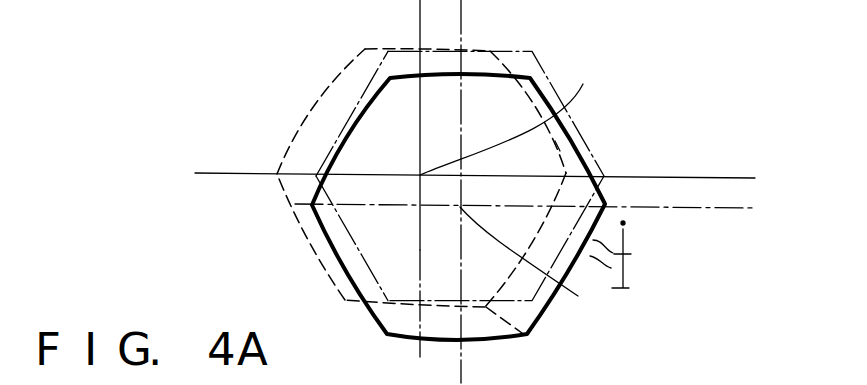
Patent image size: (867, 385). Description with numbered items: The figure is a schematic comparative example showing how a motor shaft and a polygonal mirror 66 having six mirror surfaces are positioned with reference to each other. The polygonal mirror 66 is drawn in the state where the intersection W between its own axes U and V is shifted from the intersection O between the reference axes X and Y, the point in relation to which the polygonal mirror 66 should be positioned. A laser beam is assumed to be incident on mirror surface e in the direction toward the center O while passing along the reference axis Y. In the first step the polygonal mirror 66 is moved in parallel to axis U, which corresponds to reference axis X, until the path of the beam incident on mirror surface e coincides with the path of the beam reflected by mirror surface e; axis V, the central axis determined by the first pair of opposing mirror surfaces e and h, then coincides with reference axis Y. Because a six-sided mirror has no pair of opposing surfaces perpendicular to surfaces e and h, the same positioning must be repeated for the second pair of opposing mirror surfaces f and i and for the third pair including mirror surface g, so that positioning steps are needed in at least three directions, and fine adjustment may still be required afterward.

The hexagonal polygon member 66 is at (580, 170).
The mirror surface e is at (367, 48).
The mirror surface f is at (296, 217).
The mirror surface g is at (299, 127).
The mirror surface h is at (523, 334).
The mirror surface i is at (583, 112).
The intersection W is at (515, 120).
The intersection O is at (531, 263).
The axis U is at (488, 178).
The reference axis X is at (537, 210).
The axis V is at (417, 192).